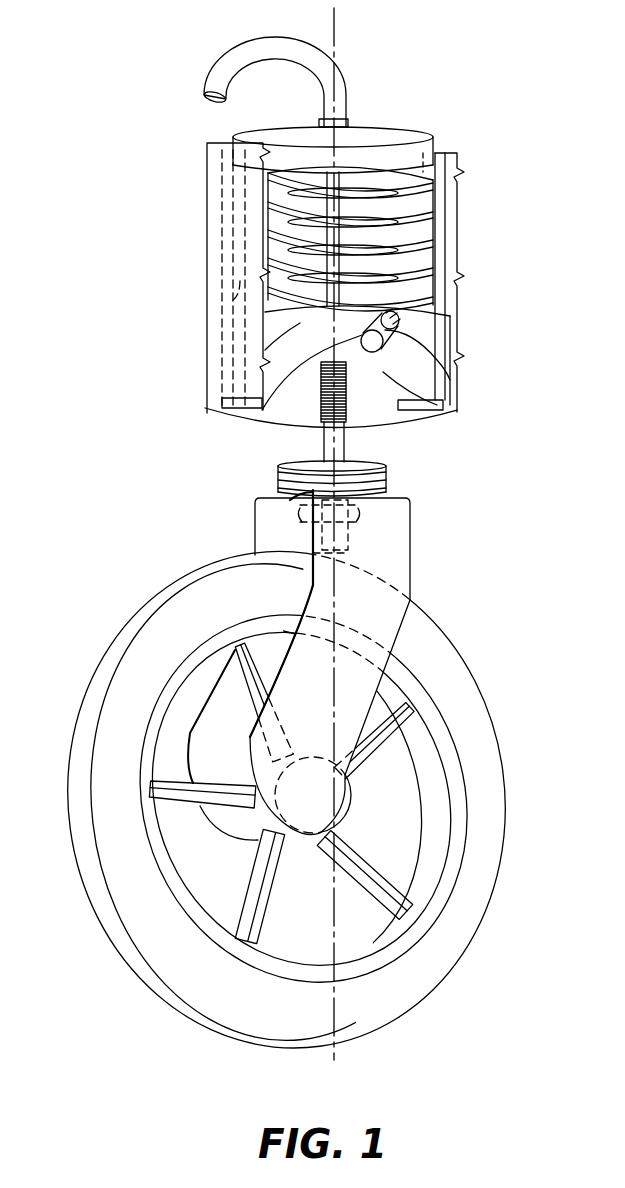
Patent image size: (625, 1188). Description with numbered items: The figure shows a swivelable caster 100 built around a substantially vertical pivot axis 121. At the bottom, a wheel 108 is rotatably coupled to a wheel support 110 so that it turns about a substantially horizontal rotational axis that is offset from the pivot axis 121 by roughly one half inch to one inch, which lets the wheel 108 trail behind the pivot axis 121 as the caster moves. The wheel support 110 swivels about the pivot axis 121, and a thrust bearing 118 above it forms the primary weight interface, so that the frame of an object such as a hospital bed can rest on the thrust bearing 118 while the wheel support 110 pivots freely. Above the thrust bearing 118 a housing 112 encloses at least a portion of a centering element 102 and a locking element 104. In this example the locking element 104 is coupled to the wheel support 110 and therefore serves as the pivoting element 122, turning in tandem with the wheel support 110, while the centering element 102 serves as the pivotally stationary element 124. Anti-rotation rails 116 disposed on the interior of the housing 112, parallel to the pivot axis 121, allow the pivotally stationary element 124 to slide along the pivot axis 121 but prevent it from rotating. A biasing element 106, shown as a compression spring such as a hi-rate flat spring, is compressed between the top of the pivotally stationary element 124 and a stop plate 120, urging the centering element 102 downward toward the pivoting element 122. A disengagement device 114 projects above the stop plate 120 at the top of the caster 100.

The caster 100 is at (338, 1106).
The centering element 102 is at (285, 340).
The locking element 104 is at (392, 338).
The biasing element 106 is at (428, 212).
The wheel 108 is at (163, 930).
The wheel support 110 is at (395, 548).
The housing 112 is at (218, 218).
The disengagement device 114 is at (340, 90).
The anti-rotation rails 116 is at (238, 278).
The thrust bearing 118 is at (385, 470).
The stop plate 120 is at (410, 128).
The pivot axis 121 is at (336, 22).
The pivoting element 122 is at (380, 360).
The pivotally stationary element 124 is at (460, 320).